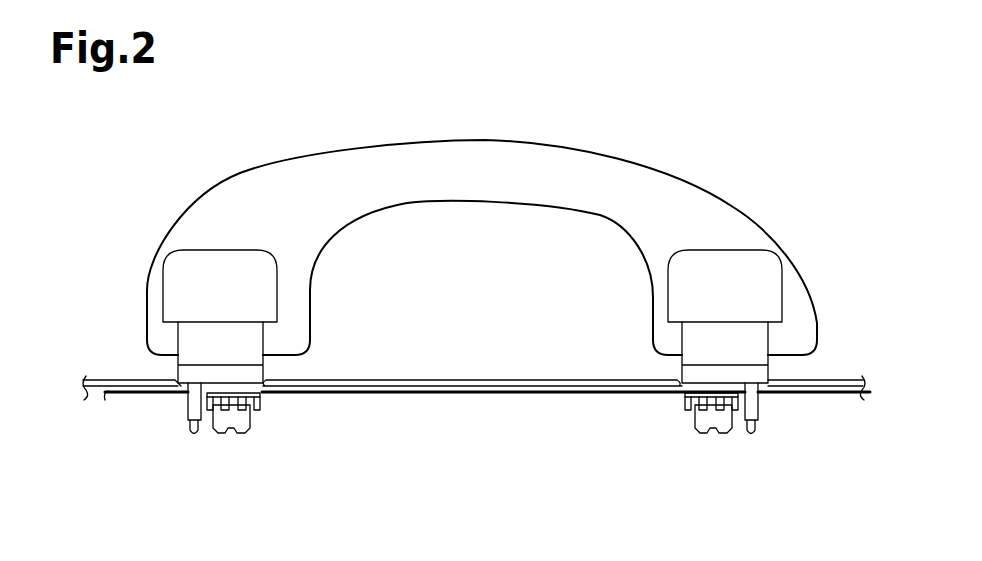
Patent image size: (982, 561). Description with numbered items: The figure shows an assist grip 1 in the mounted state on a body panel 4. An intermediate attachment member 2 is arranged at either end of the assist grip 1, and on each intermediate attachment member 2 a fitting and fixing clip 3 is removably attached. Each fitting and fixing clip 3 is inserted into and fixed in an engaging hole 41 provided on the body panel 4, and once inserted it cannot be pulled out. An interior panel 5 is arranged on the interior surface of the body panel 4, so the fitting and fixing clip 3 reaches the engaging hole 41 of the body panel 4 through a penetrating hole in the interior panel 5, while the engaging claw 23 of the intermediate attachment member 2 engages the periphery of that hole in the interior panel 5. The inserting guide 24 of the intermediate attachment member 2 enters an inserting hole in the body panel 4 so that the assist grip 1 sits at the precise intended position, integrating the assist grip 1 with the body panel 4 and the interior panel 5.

The assist grip 1 is at (638, 136).
The intermediate attachment member 2 is at (203, 345).
The fitting and fixing clip 3 is at (233, 420).
The body panel 4 is at (537, 395).
The interior panel 5 is at (462, 381).
The engaging claw 23 is at (262, 398).
The inserting guide 24 is at (187, 408).
The engaging hole 41 is at (207, 398).